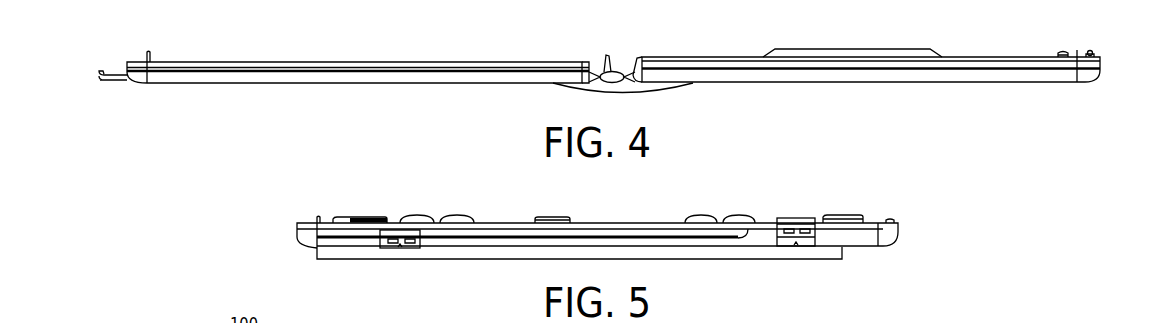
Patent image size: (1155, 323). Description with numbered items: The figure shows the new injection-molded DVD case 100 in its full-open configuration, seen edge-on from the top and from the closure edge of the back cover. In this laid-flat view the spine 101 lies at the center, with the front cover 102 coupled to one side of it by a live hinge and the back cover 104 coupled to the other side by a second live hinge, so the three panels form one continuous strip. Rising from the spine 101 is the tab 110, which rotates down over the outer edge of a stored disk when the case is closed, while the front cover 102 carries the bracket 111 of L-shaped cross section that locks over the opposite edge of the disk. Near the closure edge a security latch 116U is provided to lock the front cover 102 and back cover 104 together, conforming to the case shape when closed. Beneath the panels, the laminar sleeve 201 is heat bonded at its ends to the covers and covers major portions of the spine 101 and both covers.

In FIG. 4, the DVD case 100 is at (240, 48).
In FIG. 5, the DVD case 100 is at (305, 196).
In FIG. 4, the spine 101 is at (613, 72).
In FIG. 4, the front cover 102 is at (877, 78).
In FIG. 4, the back cover 104 is at (380, 78).
In FIG. 5, the back cover 104 is at (617, 228).
In FIG. 4, the tab 110 is at (606, 57).
In FIG. 5, the tab 110 is at (552, 216).
In FIG. 4, the bracket 111 is at (1055, 50).
In FIG. 4, the security latch 116U is at (112, 83).
In FIG. 4, the sleeve 201 is at (577, 94).
In FIG. 5, the sleeve 201 is at (500, 252).